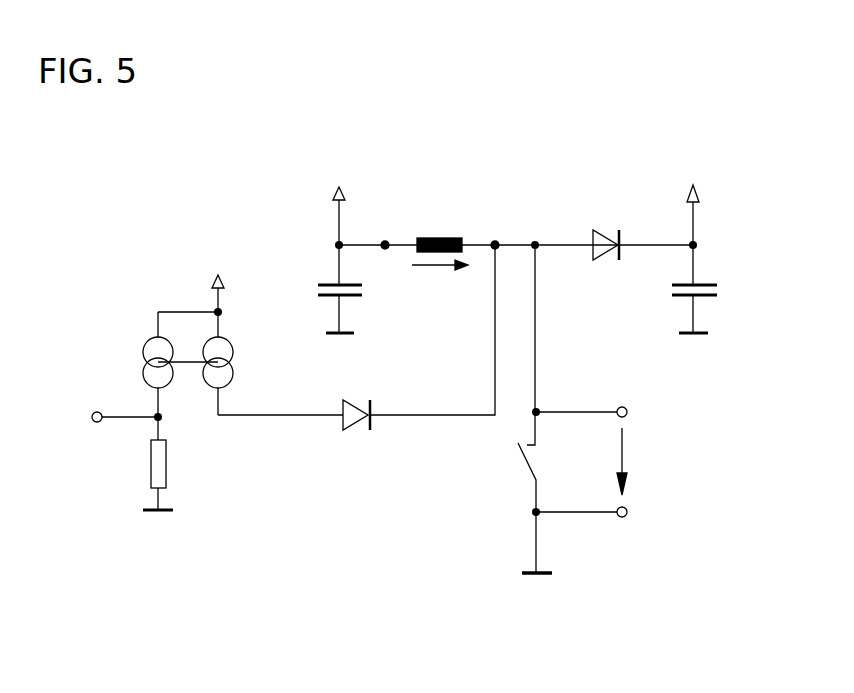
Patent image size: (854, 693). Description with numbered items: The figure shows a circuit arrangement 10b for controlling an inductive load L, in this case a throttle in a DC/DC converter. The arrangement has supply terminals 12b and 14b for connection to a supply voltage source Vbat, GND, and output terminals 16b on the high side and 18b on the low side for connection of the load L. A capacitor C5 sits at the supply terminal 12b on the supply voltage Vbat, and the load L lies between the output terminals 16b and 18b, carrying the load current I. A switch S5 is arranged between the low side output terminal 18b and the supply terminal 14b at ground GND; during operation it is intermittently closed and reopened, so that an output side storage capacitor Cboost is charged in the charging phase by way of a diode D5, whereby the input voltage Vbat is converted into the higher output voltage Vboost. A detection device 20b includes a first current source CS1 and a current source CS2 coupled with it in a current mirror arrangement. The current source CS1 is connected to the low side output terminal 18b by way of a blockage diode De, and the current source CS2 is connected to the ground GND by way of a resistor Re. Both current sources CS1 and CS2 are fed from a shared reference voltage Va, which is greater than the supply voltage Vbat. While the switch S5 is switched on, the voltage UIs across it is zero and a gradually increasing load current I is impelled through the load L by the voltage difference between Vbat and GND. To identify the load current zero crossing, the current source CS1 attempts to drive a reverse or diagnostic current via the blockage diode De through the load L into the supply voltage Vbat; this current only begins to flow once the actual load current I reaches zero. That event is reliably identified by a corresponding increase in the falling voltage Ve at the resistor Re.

The circuit arrangement 10b is at (477, 150).
The supply terminal 12b is at (339, 222).
The supply terminal 14b is at (535, 543).
The high side output terminal 16b is at (385, 242).
The low side output terminal 18b is at (495, 242).
The detection device 20b is at (158, 272).
The supply voltage Vbat is at (342, 176).
The output voltage Vboost is at (694, 198).
The reference voltage Va is at (218, 278).
The falling voltage at resistor Re Ve is at (124, 399).
The capacitor C5 is at (318, 288).
The output side storage capacitor Cboost is at (672, 292).
The inductive load L is at (438, 238).
The load current I is at (440, 272).
The diode D5 is at (606, 230).
The blockage diode De is at (355, 428).
The switch S5 is at (525, 463).
The voltage across switch UIs is at (641, 461).
The first current source CS1 is at (235, 373).
The current source CS2 is at (143, 355).
The resistor Re is at (150, 465).
The ground GND is at (537, 593).